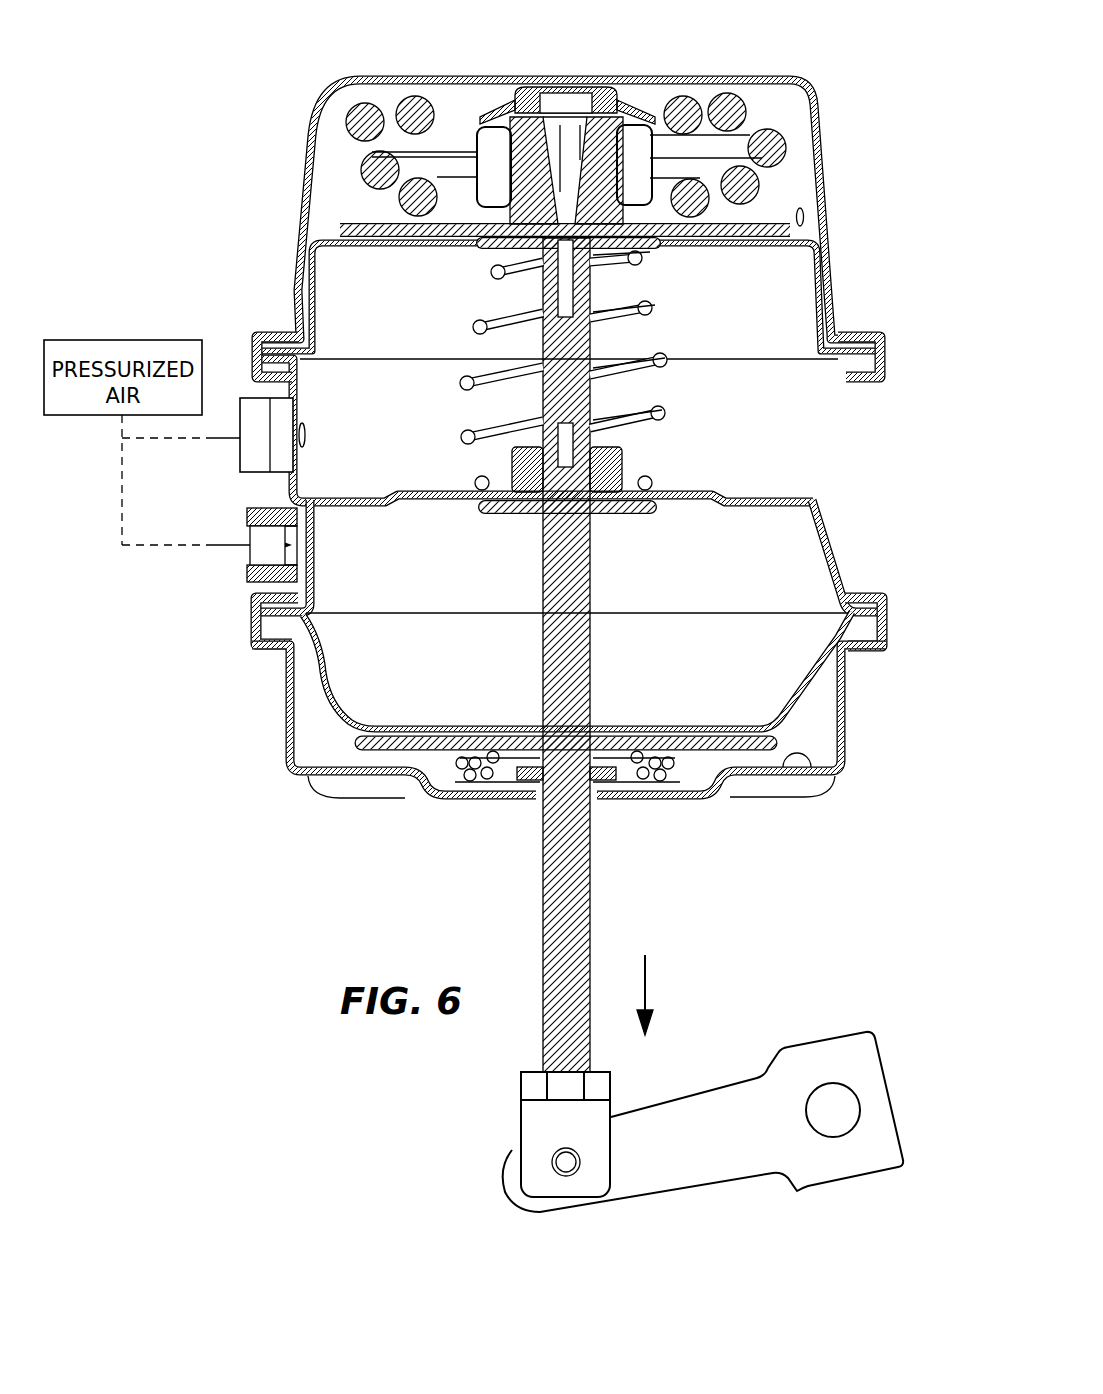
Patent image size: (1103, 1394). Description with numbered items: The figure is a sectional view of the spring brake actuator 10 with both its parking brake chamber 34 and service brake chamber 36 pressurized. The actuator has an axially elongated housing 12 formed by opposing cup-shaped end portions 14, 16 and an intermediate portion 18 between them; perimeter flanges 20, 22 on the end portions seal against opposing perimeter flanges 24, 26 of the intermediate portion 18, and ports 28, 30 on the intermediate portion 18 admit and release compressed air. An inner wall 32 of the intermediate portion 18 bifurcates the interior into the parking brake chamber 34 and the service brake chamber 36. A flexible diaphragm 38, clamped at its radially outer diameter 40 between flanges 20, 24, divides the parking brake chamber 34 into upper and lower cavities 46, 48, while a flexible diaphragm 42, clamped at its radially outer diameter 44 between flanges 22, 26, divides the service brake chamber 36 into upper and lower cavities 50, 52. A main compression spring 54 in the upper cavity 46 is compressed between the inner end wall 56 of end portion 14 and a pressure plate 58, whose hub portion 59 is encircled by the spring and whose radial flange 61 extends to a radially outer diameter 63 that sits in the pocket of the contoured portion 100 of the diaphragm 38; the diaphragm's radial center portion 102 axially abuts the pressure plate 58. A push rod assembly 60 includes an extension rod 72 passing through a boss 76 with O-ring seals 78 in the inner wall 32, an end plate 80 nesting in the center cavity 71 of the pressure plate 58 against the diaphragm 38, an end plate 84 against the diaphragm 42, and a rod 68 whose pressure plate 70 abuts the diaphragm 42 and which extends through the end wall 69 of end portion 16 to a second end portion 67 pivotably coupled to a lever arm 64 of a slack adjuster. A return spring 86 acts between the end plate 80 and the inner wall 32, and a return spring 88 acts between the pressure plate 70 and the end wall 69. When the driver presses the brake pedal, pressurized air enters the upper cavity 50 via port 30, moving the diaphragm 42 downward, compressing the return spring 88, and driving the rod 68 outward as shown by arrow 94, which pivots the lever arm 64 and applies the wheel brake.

The spring brake actuator 10 is at (880, 68).
The housing 12 is at (876, 427).
The cup-shaped end portion 14 is at (835, 212).
The cup-shaped end portion 16 is at (847, 723).
The intermediate portion 18 is at (840, 478).
The perimeter flange 20 is at (858, 330).
The perimeter flange 22 is at (848, 654).
The perimeter flange 24 is at (856, 381).
The perimeter flange 26 is at (860, 597).
The port 28 is at (243, 398).
The port 30 is at (247, 582).
The inner wall 32 is at (417, 470).
The parking brake chamber 34 is at (322, 196).
The service brake chamber 36 is at (298, 689).
The flexible diaphragm 38 is at (770, 252).
The radially outer diameter 40 is at (880, 343).
The flexible diaphragm 42 is at (350, 714).
The radially outer diameter 44 is at (882, 610).
The upper cavity 46 is at (805, 168).
The lower cavity 48 is at (800, 447).
The upper cavity 50 is at (355, 550).
The lower cavity 52 is at (305, 740).
The main compression spring 54 is at (722, 100).
The inner end wall 56 is at (368, 104).
The pressure plate 58 is at (362, 215).
The hub portion 59 is at (567, 128).
The push rod assembly 60 is at (522, 910).
The radial flange 61 is at (780, 197).
The radially outer diameter 63 is at (328, 240).
The lever arm 64 is at (675, 1168).
The second end portion 67 is at (500, 1117).
The rod 68 is at (580, 818).
The end wall 69 is at (833, 752).
The pressure plate 70 is at (417, 752).
The center cavity 71 is at (498, 130).
The extension rod 72 is at (594, 394).
The boss 76 is at (618, 456).
The O-ring seals 78 is at (517, 463).
The end plate 80 is at (625, 252).
The end plate 84 is at (520, 514).
The return spring 86 is at (467, 379).
The return spring 88 is at (482, 776).
The arrow 94 is at (648, 987).
The contoured portion 100 is at (290, 244).
The radial center portion 102 is at (440, 252).